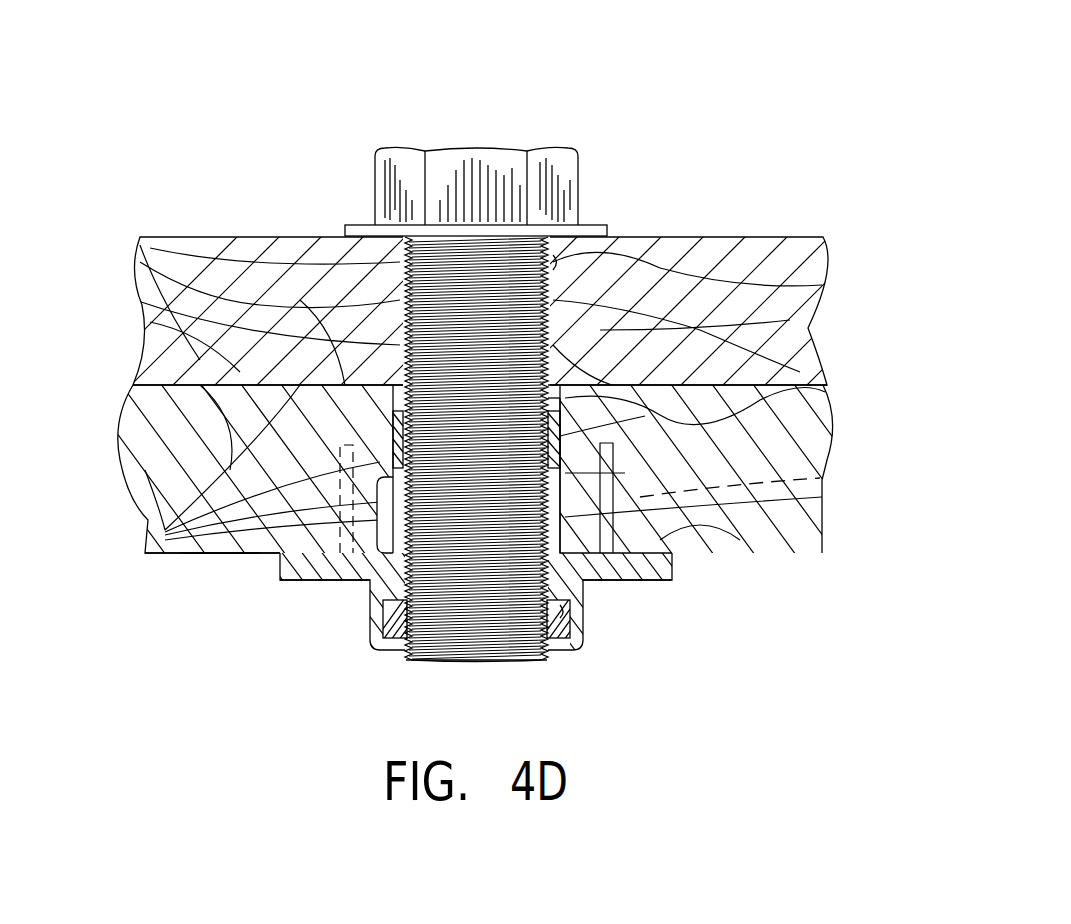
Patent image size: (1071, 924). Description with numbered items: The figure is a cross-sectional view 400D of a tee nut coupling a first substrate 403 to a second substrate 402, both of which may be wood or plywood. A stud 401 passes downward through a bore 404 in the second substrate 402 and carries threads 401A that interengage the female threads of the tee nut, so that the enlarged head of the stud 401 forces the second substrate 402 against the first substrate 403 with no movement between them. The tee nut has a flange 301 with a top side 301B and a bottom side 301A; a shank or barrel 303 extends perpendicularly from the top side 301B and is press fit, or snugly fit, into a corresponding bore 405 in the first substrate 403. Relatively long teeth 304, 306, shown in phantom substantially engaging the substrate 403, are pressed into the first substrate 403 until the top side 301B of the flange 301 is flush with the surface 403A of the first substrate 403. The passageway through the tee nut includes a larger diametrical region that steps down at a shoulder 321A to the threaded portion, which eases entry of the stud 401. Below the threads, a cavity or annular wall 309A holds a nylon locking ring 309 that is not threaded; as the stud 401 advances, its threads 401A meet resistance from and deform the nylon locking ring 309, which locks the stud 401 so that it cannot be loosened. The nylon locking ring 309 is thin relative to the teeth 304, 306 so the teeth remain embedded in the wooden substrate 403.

The cross-sectional view 400D is at (757, 92).
The stud 401 is at (457, 172).
The threads 401A is at (478, 630).
The second substrate 402 is at (235, 267).
The bore 404 is at (553, 278).
The stepped bore portion or shoulder 321A is at (250, 333).
The bore 405 is at (630, 405).
The first substrate 403 is at (117, 490).
The tooth 304 is at (822, 478).
The surface 403A is at (170, 557).
The tooth 306 is at (243, 556).
The shank or barrel 303 is at (393, 478).
The flange 301 is at (667, 565).
The bottom side of flange 301A is at (653, 580).
The top side of flange 301B is at (668, 540).
The nylon locking ring 309 is at (558, 637).
The cavity or annular wall 309A is at (567, 613).